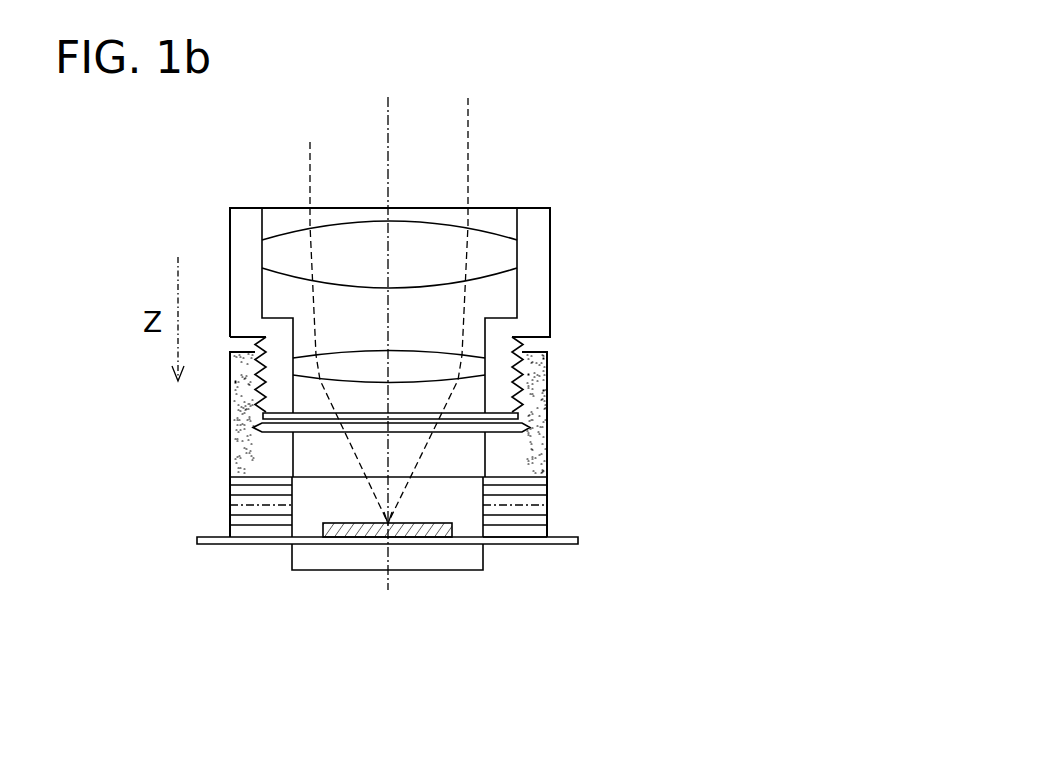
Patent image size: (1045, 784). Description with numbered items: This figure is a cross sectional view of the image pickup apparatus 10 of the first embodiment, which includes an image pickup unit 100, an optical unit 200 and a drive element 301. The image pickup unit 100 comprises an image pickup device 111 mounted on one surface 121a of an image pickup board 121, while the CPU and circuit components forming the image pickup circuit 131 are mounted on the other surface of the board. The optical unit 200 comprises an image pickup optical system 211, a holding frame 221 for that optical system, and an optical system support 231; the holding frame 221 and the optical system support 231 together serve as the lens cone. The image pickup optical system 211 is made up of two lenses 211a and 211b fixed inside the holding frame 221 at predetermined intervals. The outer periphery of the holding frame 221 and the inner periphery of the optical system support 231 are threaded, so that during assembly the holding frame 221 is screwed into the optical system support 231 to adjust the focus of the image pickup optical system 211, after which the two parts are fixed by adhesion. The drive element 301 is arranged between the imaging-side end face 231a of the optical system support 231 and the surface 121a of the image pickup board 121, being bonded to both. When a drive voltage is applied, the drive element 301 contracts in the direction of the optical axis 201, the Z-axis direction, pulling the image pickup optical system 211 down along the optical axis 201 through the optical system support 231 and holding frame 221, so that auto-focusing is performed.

The image pickup apparatus 10 is at (712, 140).
The image pickup unit 100 is at (708, 587).
The image pickup device 111 is at (380, 544).
The image pickup board 121 is at (517, 545).
The surface of the image pickup board 121a is at (530, 537).
The image pickup circuit 131 is at (452, 572).
The optical unit 200 is at (772, 335).
The optical axis 201 is at (388, 97).
The image pickup optical system 211 is at (664, 242).
The lens 211a is at (483, 255).
The lens 211b is at (463, 370).
The holding frame 221 is at (532, 207).
The optical system support 231 is at (548, 412).
The imaging-side end face 231a is at (520, 477).
The drive element 301 is at (548, 504).